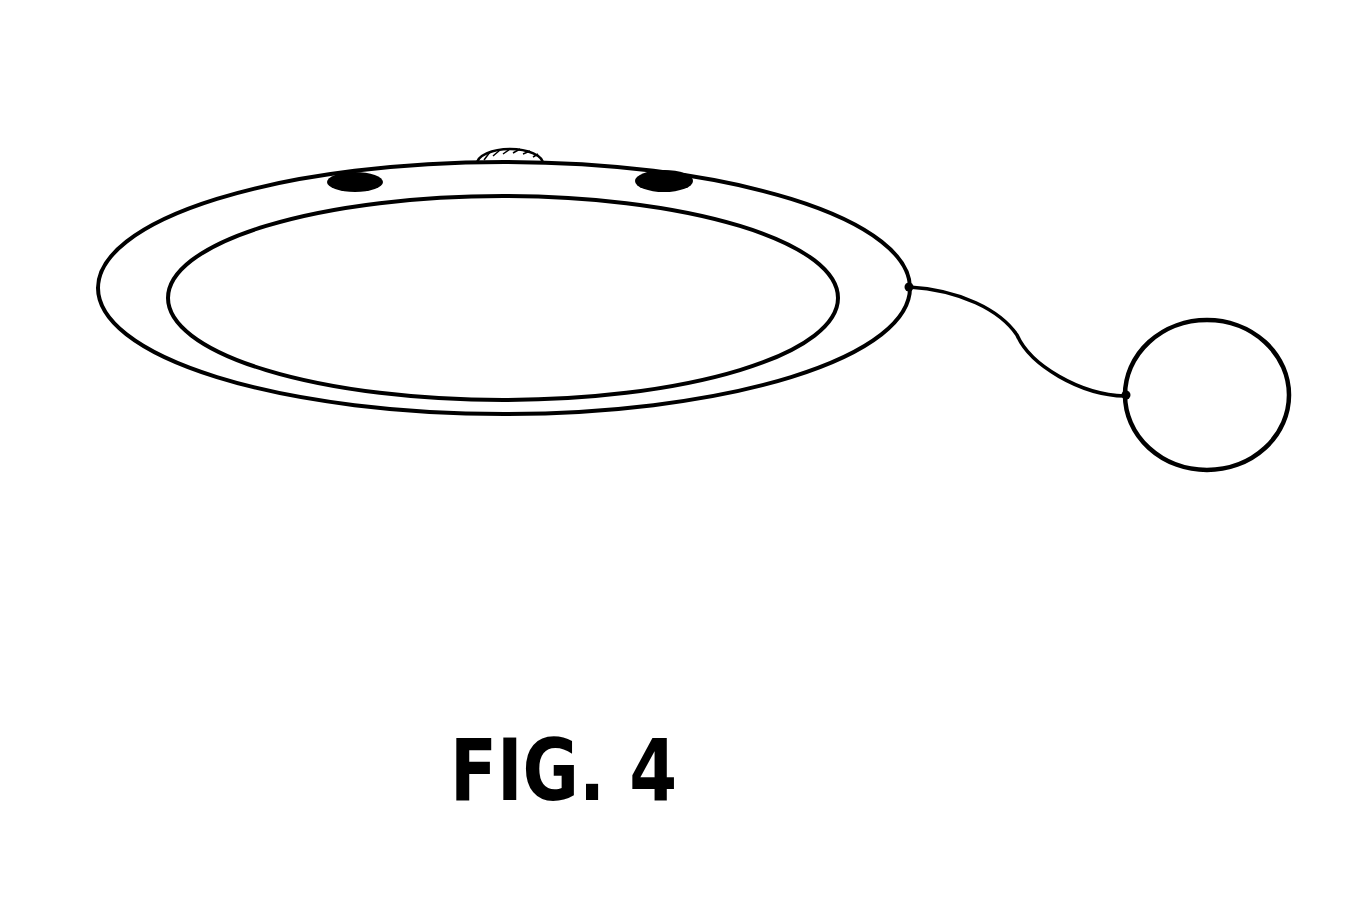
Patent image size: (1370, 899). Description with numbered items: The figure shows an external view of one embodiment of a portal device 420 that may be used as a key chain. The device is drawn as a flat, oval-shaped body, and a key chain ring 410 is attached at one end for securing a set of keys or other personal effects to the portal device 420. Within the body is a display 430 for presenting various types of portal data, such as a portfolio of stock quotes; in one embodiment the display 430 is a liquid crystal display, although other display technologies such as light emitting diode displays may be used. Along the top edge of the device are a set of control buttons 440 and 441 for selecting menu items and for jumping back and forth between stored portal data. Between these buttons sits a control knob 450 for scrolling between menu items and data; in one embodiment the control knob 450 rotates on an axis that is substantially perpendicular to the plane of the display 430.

The key chain ring 410 is at (1257, 458).
The portal device 420 is at (198, 363).
The display 430 is at (722, 325).
The control button 440 is at (348, 170).
The control button 441 is at (676, 170).
The control knob 450 is at (498, 150).